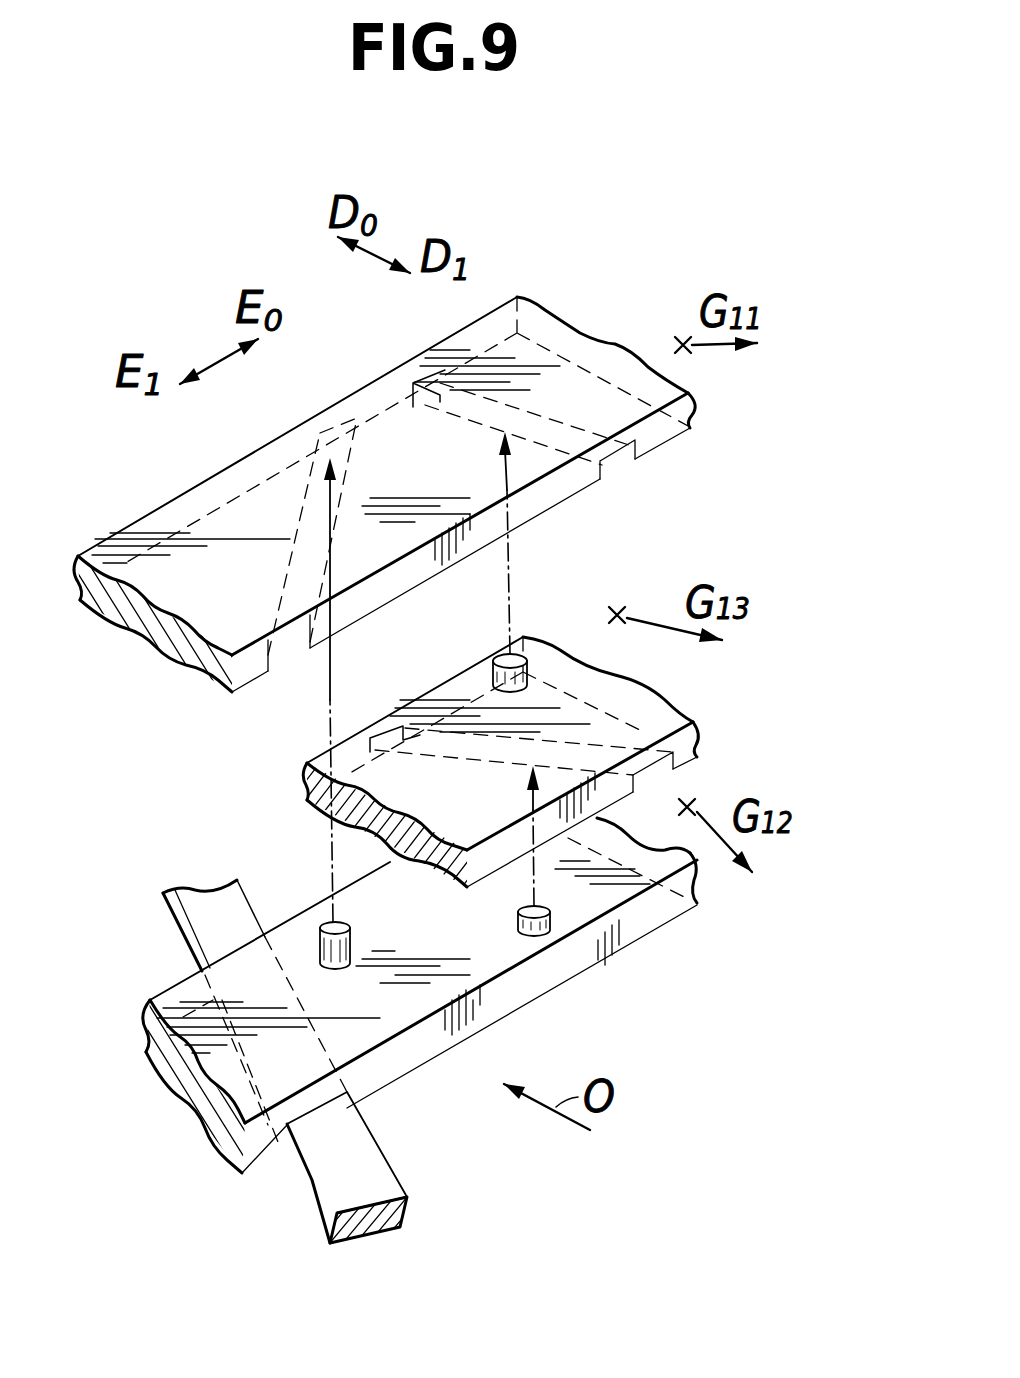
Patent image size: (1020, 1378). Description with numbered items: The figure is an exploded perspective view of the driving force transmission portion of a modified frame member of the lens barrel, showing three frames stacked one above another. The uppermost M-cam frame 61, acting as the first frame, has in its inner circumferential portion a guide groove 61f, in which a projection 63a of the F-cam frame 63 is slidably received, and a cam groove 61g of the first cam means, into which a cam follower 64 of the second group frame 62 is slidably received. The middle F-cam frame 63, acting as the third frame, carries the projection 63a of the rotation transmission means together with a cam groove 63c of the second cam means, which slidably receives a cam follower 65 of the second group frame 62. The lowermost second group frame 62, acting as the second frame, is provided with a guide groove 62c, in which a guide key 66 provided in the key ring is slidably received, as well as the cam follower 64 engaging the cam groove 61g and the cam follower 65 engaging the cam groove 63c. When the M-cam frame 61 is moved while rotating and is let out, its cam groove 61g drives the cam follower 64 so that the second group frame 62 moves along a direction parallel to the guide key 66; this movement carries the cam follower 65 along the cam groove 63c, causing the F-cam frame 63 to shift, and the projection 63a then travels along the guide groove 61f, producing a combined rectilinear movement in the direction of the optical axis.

The M-cam frame 61 is at (600, 340).
The guide groove 61f is at (610, 458).
The cam groove 61g is at (287, 655).
The second group frame 62 is at (668, 850).
The guide groove 62c is at (322, 1106).
The F-cam frame 63 is at (635, 695).
The projection 63a is at (514, 652).
The cam groove 63c is at (655, 778).
The cam follower 64 is at (325, 920).
The cam follower 65 is at (550, 922).
The guide key 66 is at (398, 1178).